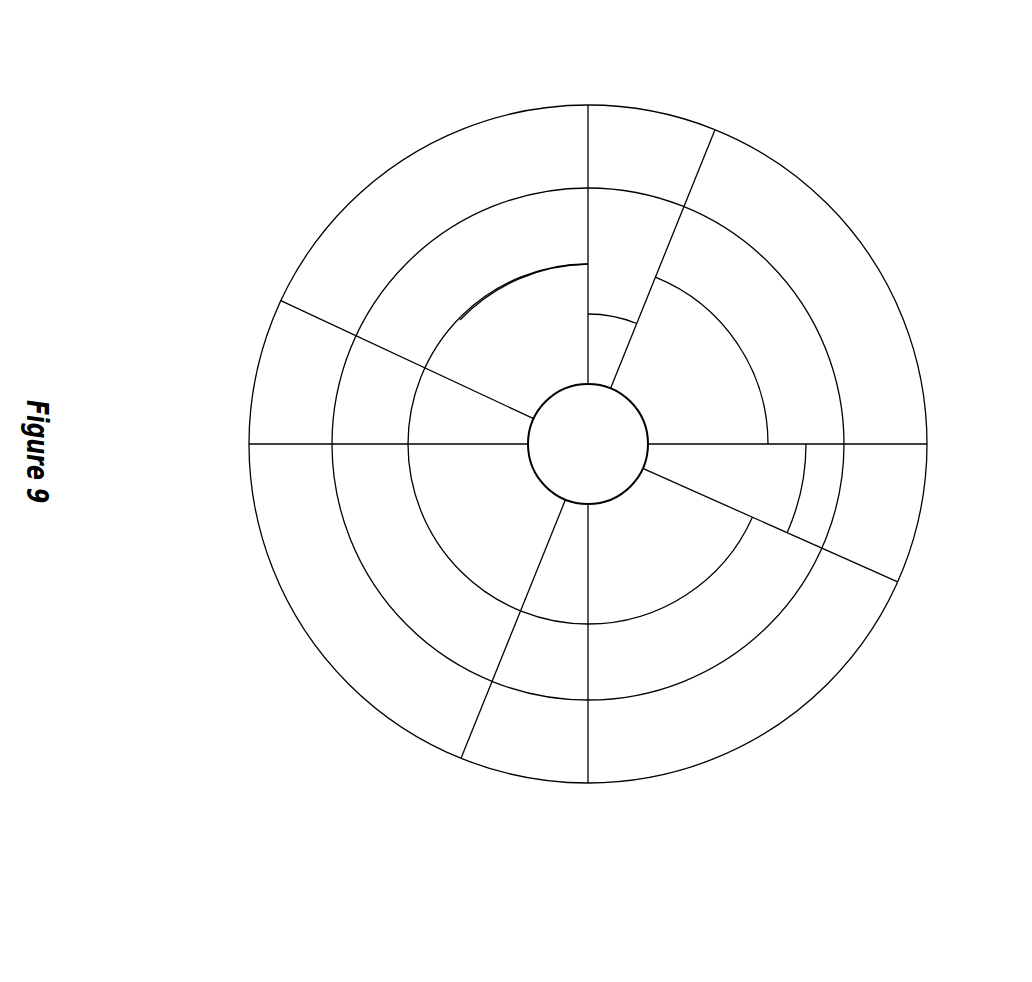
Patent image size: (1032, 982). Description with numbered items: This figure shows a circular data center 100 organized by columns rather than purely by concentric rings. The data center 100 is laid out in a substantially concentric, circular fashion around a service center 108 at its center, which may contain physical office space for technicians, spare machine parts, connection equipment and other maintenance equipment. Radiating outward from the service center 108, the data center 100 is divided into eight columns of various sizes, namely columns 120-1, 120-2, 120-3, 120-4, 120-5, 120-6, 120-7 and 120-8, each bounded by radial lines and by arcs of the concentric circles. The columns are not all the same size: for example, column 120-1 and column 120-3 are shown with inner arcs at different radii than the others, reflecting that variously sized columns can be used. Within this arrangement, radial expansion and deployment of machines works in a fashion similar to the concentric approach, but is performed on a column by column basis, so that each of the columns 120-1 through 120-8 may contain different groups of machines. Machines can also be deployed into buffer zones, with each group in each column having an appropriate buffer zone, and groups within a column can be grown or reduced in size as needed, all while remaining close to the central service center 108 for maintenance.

The data center 100 is at (825, 97).
The service center 108 is at (605, 454).
The column 120-1 is at (662, 112).
The column 120-2 is at (872, 253).
The column 120-3 is at (917, 518).
The column 120-4 is at (775, 727).
The column 120-5 is at (531, 778).
The column 120-6 is at (342, 675).
The column 120-7 is at (261, 352).
The column 120-8 is at (418, 152).